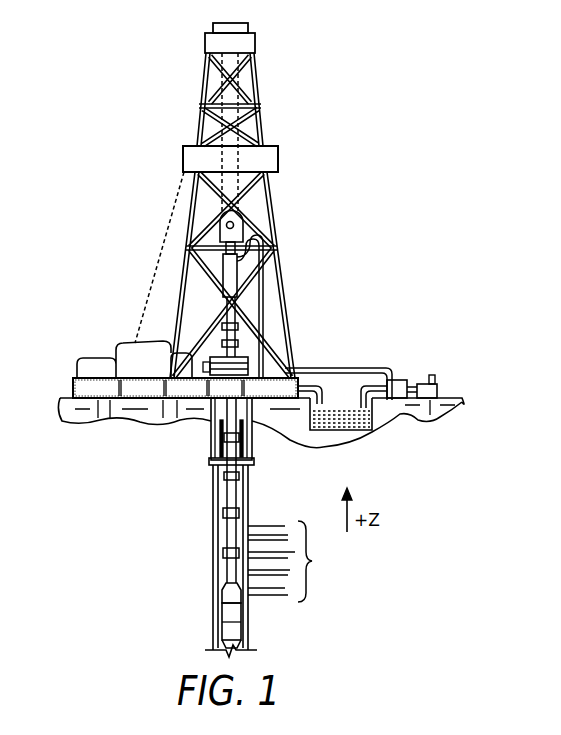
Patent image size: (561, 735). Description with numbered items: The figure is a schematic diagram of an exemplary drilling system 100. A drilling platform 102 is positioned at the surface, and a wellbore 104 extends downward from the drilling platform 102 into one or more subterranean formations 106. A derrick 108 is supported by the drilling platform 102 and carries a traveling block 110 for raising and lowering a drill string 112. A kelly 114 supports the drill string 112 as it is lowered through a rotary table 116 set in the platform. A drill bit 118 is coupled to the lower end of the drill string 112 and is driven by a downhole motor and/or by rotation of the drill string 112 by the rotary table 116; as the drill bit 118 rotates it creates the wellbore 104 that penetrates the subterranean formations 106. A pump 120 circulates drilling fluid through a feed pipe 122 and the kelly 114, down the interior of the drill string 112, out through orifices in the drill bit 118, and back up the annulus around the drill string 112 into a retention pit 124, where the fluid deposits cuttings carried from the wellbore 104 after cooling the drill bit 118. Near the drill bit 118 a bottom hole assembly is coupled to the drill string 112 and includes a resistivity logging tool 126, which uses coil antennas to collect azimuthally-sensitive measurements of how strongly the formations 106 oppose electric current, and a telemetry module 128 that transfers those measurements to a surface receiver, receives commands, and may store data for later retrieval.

The drilling system 100 is at (367, 151).
The drilling platform 102 is at (72, 386).
The wellbore 104 is at (250, 496).
The subterranean formations 106 is at (297, 561).
The derrick 108 is at (262, 86).
The traveling block 110 is at (240, 224).
The drill string 112 is at (232, 482).
The kelly 114 is at (235, 278).
The rotary table 116 is at (247, 356).
The drill bit 118 is at (250, 643).
The pump 120 is at (405, 380).
The feed pipe 122 is at (385, 367).
The retention pit 124 is at (338, 432).
The resistivity logging tool 126 is at (222, 616).
The telemetry module 128 is at (222, 596).